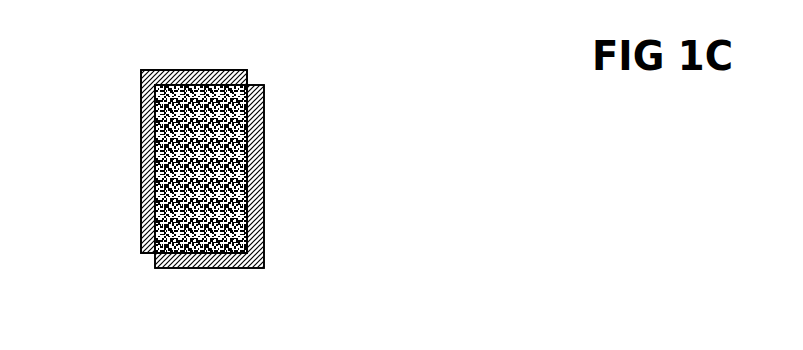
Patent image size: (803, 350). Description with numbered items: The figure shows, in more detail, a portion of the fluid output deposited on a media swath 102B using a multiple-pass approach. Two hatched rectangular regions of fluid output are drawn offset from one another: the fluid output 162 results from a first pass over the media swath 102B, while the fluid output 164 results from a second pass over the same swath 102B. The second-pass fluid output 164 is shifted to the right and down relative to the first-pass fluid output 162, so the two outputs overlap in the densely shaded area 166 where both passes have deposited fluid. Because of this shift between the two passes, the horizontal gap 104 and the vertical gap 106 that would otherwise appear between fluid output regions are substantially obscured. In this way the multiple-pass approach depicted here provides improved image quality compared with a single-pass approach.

The vertical gap 106 is at (253, 52).
The fluid output 162 is at (141, 93).
The area 166 is at (160, 158).
The media swath 102B is at (127, 201).
The horizontal gap 104 is at (128, 260).
The fluid output 164 is at (264, 173).